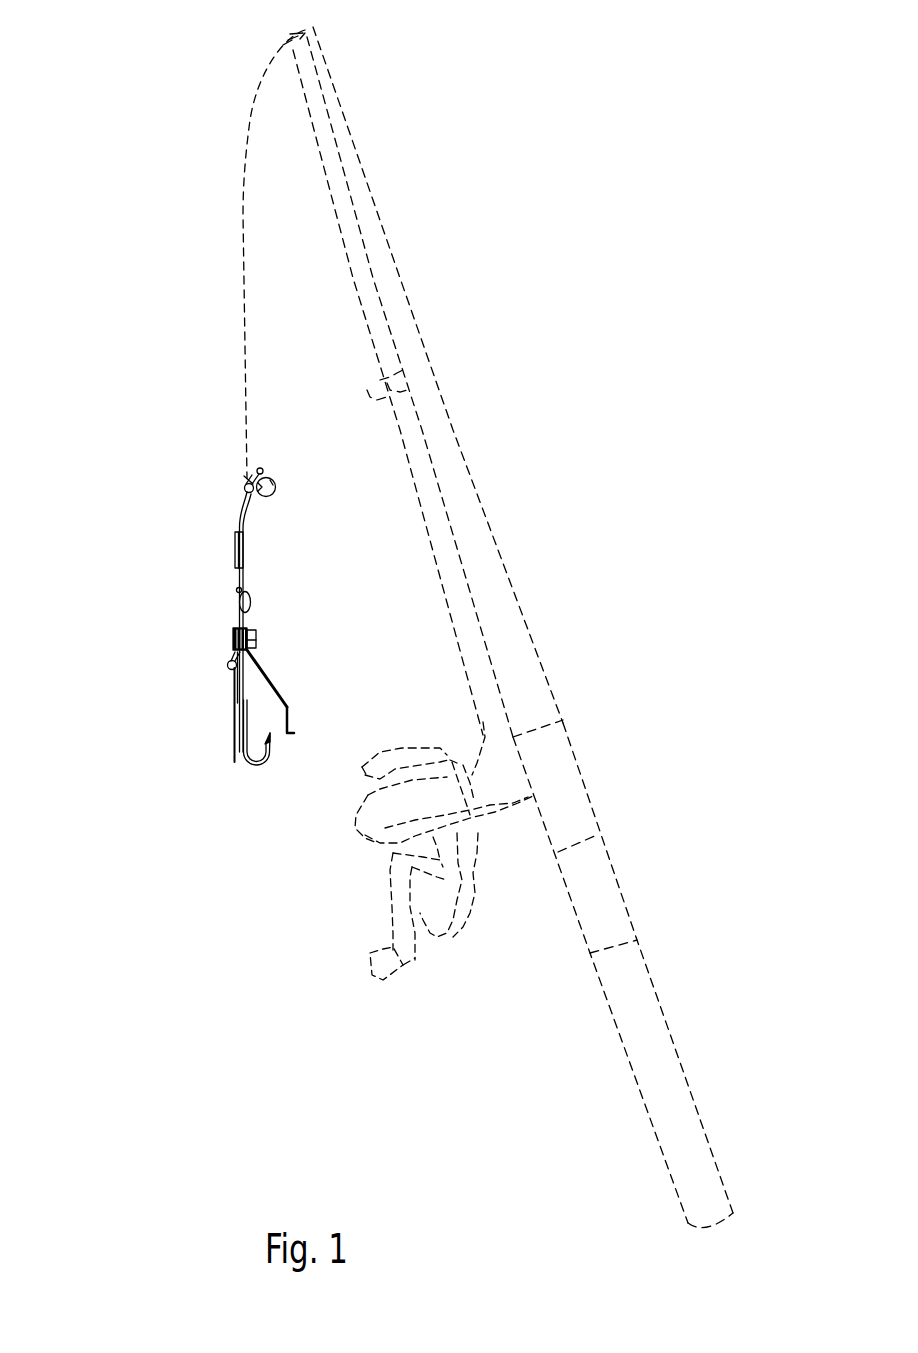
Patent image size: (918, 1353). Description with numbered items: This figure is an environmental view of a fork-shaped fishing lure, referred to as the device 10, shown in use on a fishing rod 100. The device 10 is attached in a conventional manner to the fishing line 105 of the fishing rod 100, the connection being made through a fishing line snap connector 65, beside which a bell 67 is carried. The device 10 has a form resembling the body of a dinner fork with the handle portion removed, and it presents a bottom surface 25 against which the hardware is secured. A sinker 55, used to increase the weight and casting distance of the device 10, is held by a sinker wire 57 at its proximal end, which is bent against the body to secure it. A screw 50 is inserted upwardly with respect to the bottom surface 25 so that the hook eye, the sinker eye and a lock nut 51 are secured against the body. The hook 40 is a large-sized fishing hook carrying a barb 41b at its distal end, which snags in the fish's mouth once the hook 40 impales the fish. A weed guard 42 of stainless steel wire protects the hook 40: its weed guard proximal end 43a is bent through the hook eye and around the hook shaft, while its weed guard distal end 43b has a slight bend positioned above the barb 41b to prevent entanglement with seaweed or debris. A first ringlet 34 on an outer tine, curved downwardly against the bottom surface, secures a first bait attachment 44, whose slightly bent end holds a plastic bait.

The fork-shaped fishing lure 10 is at (158, 454).
The bottom surface 25 is at (238, 587).
The first ringlet 34 is at (230, 668).
The hook 40 is at (254, 763).
The barb 41b is at (272, 741).
The weed guard 42 is at (293, 707).
The weed guard proximal end 43a is at (253, 656).
The weed guard distal end 43b is at (292, 733).
The first bait attachment 44 is at (233, 723).
The screw 50 is at (233, 640).
The lock nut 51 is at (256, 640).
The sinker 55 is at (251, 603).
The sinker wire 57 is at (244, 546).
The fishing line snap connector 65 is at (246, 489).
The bell 67 is at (268, 477).
The fishing rod 100 is at (395, 290).
The fishing line 105 is at (242, 247).